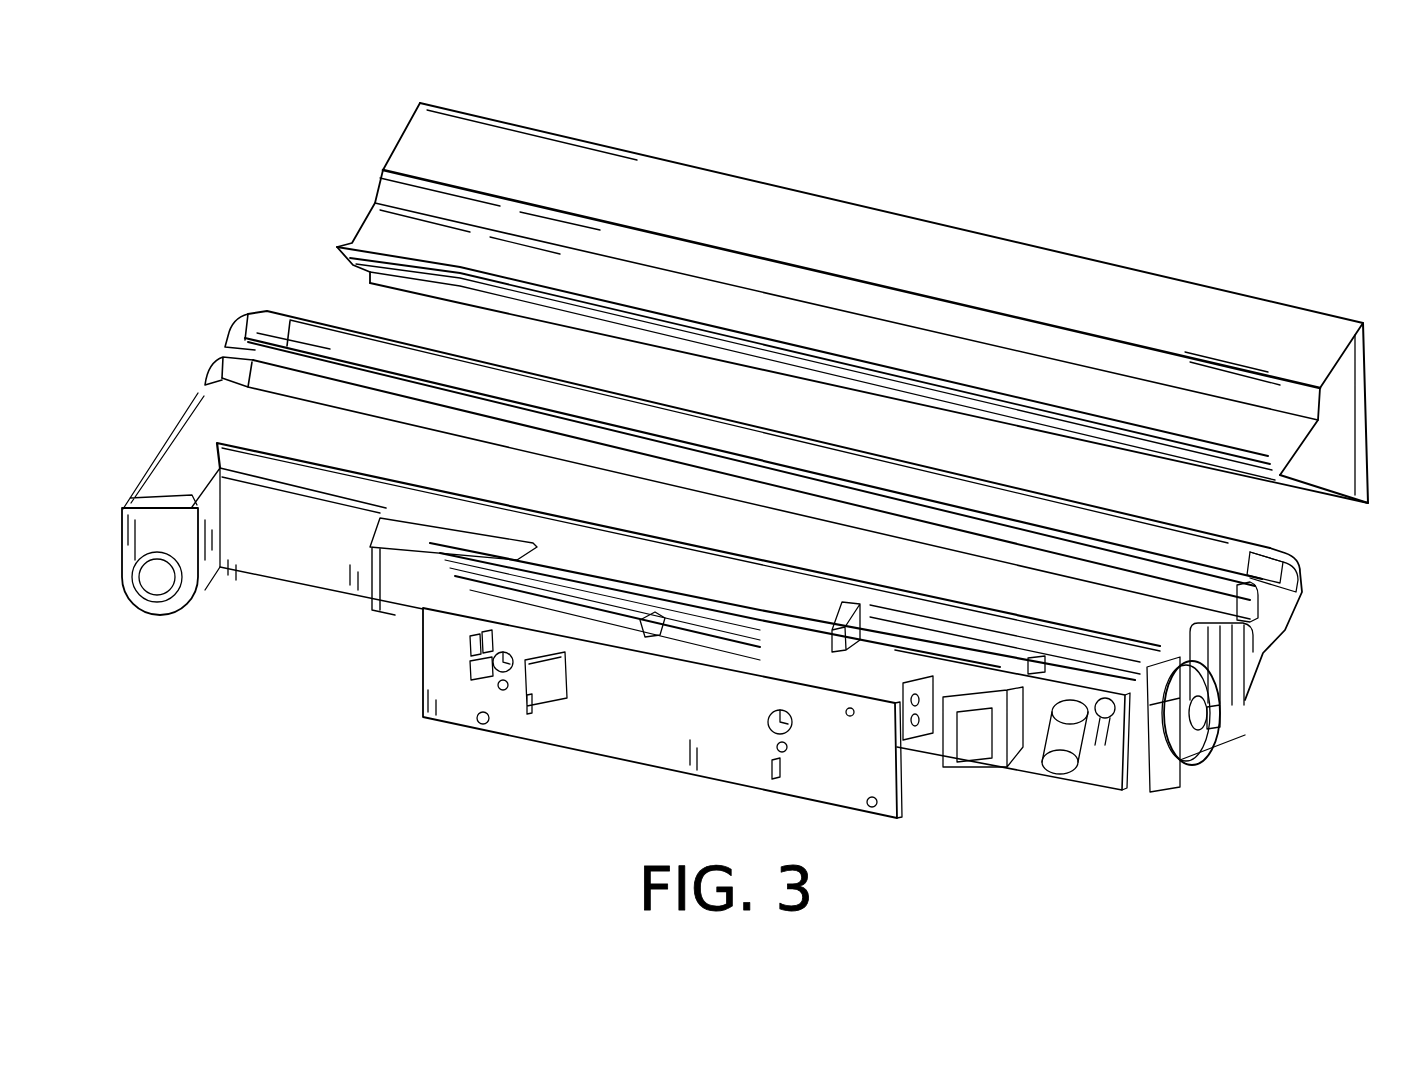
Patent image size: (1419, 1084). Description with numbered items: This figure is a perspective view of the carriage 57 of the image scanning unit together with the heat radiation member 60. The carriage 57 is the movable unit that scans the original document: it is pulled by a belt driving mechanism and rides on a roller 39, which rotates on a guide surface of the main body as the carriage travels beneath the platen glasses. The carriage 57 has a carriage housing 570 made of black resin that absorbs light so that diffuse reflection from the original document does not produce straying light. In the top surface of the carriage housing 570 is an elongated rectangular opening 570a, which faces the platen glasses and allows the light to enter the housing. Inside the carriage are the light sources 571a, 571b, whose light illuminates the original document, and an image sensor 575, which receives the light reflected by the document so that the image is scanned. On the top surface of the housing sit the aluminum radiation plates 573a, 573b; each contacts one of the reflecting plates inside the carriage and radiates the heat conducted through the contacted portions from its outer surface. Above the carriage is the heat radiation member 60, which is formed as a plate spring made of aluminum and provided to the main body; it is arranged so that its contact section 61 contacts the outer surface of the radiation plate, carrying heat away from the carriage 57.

The roller 39 is at (1203, 742).
The carriage 57 is at (940, 815).
The heat radiation member 60 is at (1275, 330).
The contact section 61 is at (950, 355).
The carriage housing 570 is at (1290, 613).
The elongated rectangular opening 570a is at (1099, 572).
The light source 571a is at (262, 306).
The light source 571b is at (208, 388).
The radiation plate 573a is at (858, 473).
The radiation plate 573b is at (845, 548).
The image sensor 575 is at (632, 722).